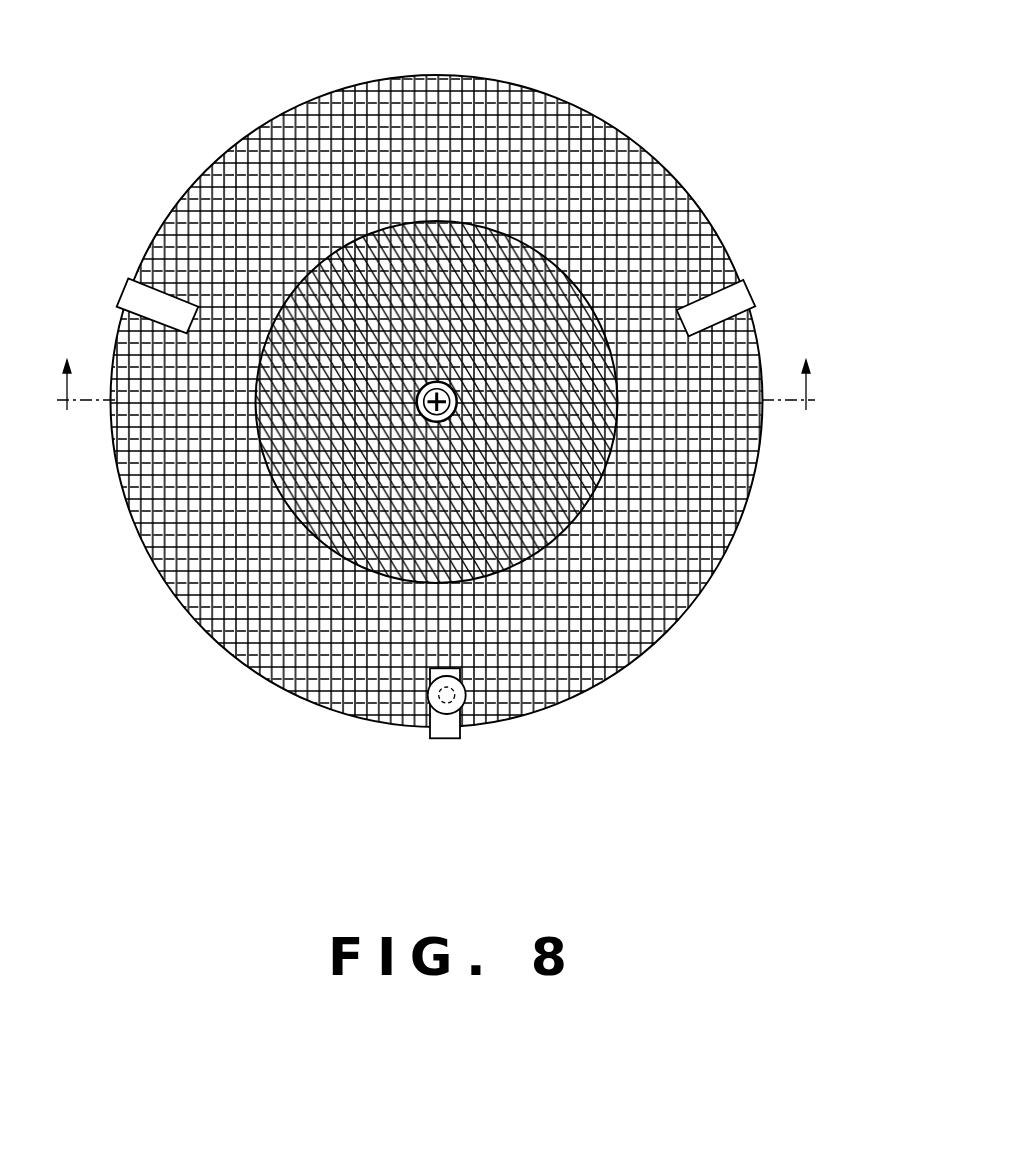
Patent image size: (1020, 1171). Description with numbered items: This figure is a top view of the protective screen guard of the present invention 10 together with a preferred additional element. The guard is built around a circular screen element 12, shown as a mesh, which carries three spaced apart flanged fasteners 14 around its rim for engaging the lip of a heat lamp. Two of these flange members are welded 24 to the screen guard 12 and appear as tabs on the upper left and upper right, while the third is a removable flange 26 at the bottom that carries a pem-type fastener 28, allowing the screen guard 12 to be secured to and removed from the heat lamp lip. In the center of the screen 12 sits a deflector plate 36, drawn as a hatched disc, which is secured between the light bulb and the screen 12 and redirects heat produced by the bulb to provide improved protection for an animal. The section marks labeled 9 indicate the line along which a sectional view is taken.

The protective screen guard 10 is at (439, 407).
The screen element 12 is at (433, 143).
The flanged fasteners 14 is at (439, 476).
The welded flange 24 is at (150, 298).
The removable flange 26 is at (525, 736).
The pem-type fastener 28 is at (430, 702).
The deflector plate 36 is at (330, 552).
The section line 9- 9 is at (435, 369).